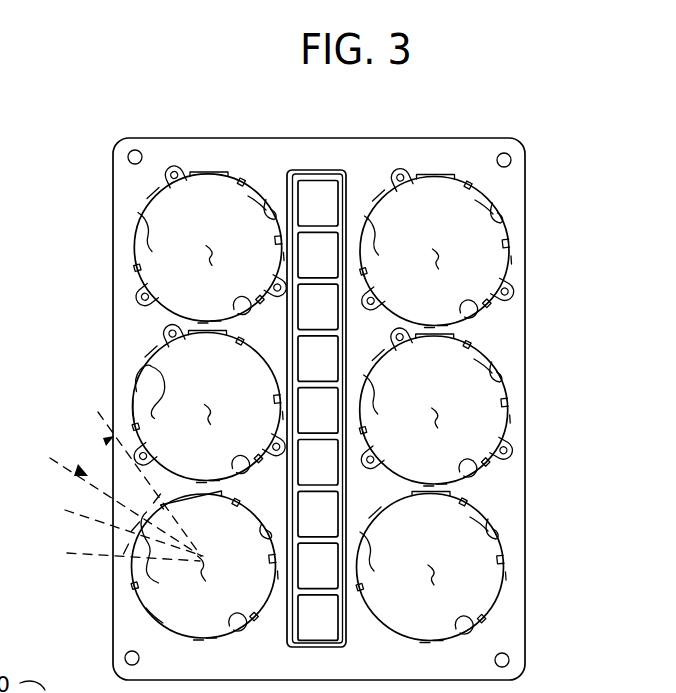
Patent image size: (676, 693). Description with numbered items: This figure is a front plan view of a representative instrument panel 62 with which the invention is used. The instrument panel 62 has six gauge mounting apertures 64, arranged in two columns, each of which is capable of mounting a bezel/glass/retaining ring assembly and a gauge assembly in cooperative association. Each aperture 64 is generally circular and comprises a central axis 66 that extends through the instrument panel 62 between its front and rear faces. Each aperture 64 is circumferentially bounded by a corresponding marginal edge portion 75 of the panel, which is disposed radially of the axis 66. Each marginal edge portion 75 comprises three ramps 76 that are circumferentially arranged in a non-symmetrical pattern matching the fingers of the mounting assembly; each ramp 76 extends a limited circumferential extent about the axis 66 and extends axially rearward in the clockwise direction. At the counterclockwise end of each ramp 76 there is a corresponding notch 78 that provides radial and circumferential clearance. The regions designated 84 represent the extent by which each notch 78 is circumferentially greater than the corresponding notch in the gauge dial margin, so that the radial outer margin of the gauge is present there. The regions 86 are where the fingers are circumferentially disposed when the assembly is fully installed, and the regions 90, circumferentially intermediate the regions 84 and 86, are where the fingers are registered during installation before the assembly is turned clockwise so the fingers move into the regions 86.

The instrument panel 62 is at (105, 152).
The gauge mounting aperture 64 is at (320, 402).
The central axis 66 is at (336, 426).
The marginal edge portion 75 is at (257, 190).
The ramp 76 is at (331, 432).
The notch 78 is at (538, 537).
The region 84 is at (78, 551).
The region 86 is at (104, 448).
The region 90 is at (80, 516).